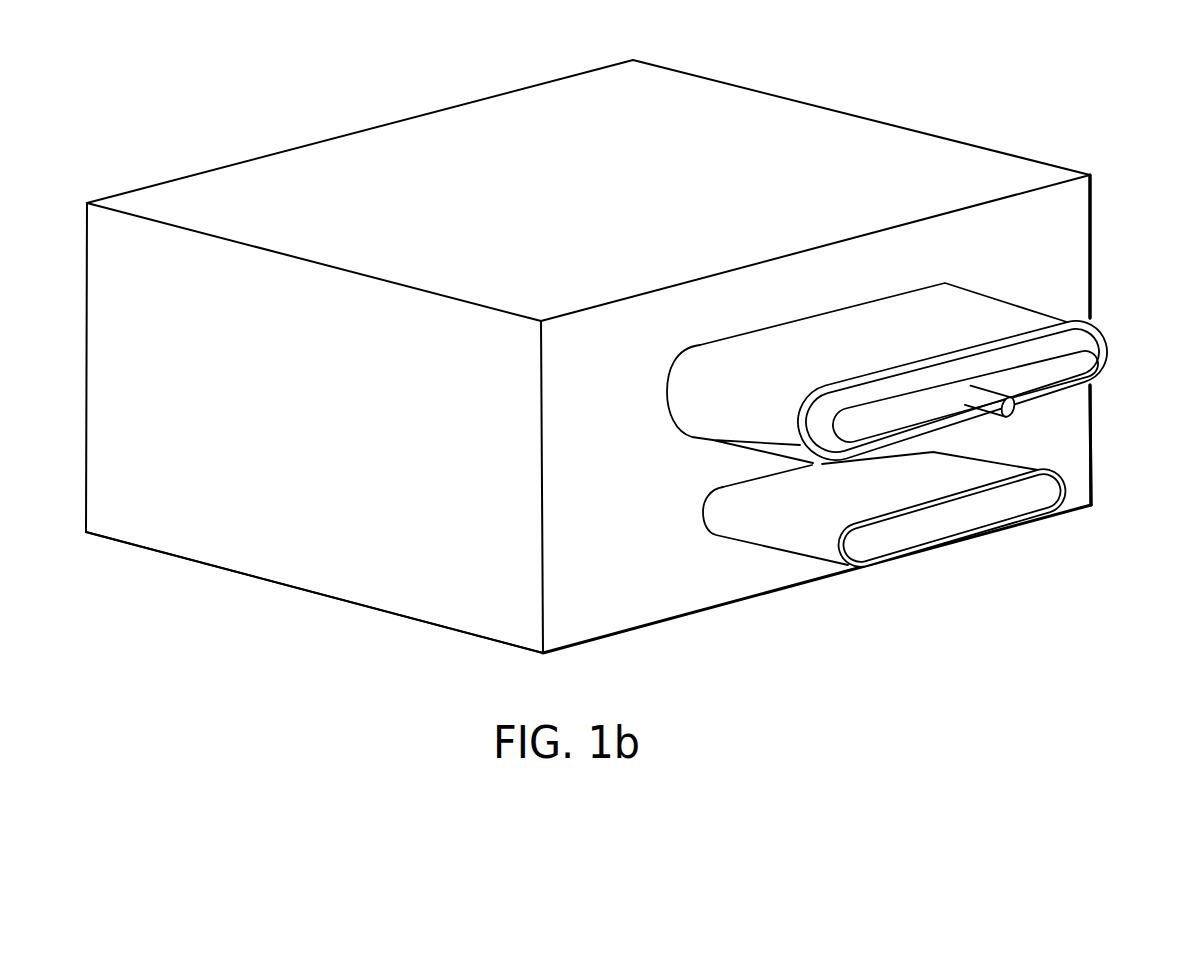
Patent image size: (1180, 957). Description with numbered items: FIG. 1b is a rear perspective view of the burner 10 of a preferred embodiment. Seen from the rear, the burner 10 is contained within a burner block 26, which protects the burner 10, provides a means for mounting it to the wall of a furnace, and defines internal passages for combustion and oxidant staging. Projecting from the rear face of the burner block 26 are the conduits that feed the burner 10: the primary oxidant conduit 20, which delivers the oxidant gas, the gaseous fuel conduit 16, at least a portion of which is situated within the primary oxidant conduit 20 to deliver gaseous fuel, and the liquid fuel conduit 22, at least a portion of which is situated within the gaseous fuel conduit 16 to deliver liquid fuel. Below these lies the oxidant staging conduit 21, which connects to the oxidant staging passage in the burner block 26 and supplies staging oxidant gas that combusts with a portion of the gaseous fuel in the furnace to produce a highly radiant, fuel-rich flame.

The burner 10 is at (374, 638).
The gaseous fuel conduit 16 is at (1085, 350).
The primary oxidant conduit 20 is at (713, 440).
The oxidant staging conduit 21 is at (837, 548).
The liquid fuel conduit 22 is at (982, 402).
The burner block 26 is at (215, 566).